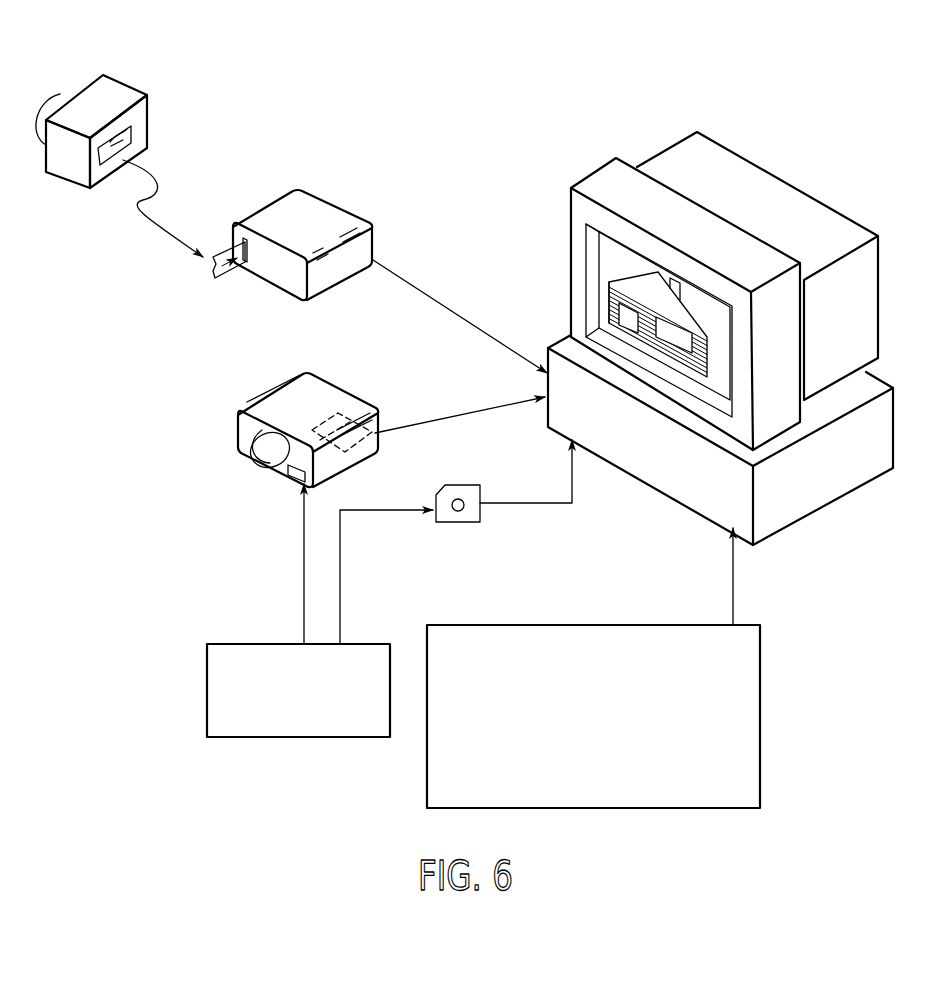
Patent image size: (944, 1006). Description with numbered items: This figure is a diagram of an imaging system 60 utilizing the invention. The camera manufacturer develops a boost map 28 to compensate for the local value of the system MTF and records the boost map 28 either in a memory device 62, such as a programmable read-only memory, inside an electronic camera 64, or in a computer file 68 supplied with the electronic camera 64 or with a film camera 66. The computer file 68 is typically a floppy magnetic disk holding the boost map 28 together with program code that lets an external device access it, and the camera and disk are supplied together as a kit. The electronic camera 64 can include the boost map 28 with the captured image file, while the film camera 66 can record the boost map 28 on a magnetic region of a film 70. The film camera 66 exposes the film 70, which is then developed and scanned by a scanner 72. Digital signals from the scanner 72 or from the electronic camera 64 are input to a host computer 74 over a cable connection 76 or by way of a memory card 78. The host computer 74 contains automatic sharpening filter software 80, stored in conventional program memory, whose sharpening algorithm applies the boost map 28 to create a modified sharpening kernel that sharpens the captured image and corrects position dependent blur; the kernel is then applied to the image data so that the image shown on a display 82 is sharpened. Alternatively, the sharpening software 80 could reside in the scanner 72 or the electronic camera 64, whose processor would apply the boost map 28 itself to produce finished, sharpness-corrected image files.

The system 60 is at (443, 112).
The boost map 28 is at (232, 643).
The memory device 62 is at (295, 479).
The electronic camera 64 is at (262, 403).
The film camera 66 is at (147, 117).
The computer file 68 is at (467, 520).
The film 70 is at (130, 138).
The scanner 72 is at (265, 218).
The host computer 74 is at (713, 505).
The cable connection 76 is at (428, 295).
The memory card 78 is at (363, 457).
The automatic sharpening filter software 80 is at (577, 623).
The display 82 is at (578, 252).